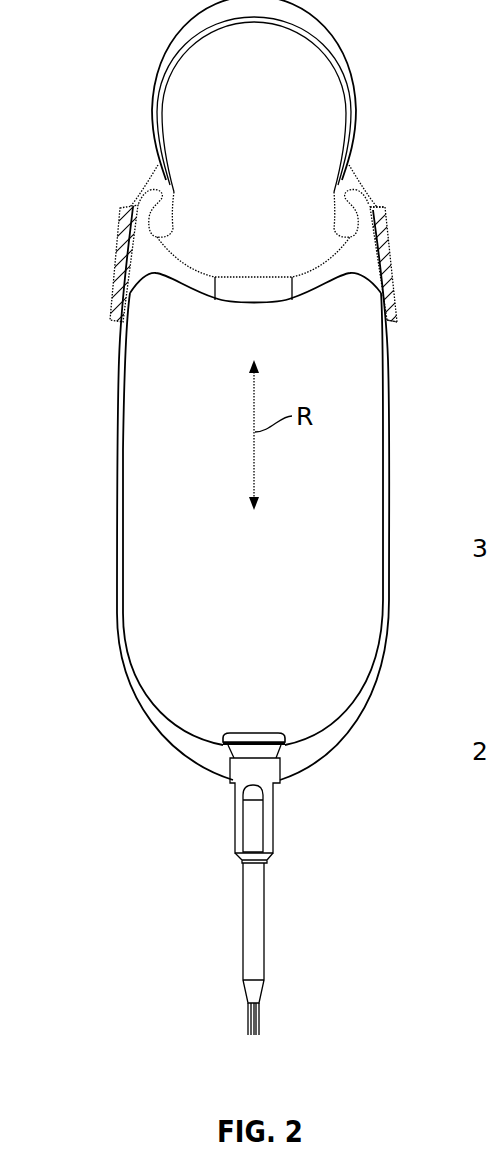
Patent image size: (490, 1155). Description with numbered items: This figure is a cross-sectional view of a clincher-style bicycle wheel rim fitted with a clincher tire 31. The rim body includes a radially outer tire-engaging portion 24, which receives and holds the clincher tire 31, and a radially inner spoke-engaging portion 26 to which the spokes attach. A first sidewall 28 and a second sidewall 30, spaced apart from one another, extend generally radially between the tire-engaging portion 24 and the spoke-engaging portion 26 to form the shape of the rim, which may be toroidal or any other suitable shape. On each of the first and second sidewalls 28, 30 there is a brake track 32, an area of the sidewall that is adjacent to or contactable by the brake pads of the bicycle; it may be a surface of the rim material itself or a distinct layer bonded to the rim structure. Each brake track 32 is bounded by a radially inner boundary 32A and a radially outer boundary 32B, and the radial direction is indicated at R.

The radially outer tire-engaging portion 24 is at (185, 293).
The radially inner spoke-engaging portion 26 is at (308, 767).
The first sidewall 28 is at (117, 483).
The second sidewall 30 is at (390, 412).
The clincher tire 31 is at (353, 143).
The brake track 32 is at (117, 253).
The radially inner boundary 32A is at (387, 320).
The radially outer boundary 32B is at (373, 208).